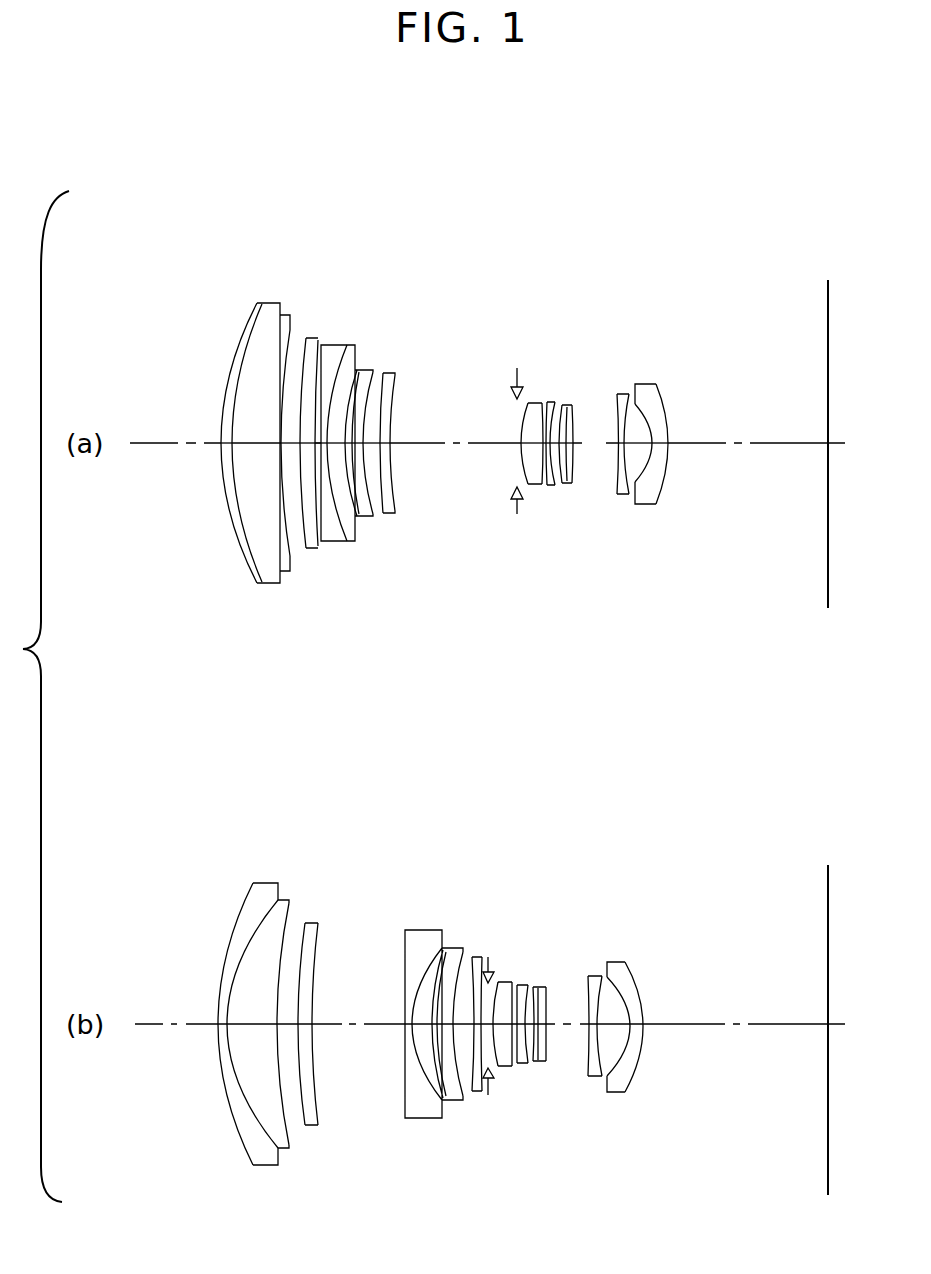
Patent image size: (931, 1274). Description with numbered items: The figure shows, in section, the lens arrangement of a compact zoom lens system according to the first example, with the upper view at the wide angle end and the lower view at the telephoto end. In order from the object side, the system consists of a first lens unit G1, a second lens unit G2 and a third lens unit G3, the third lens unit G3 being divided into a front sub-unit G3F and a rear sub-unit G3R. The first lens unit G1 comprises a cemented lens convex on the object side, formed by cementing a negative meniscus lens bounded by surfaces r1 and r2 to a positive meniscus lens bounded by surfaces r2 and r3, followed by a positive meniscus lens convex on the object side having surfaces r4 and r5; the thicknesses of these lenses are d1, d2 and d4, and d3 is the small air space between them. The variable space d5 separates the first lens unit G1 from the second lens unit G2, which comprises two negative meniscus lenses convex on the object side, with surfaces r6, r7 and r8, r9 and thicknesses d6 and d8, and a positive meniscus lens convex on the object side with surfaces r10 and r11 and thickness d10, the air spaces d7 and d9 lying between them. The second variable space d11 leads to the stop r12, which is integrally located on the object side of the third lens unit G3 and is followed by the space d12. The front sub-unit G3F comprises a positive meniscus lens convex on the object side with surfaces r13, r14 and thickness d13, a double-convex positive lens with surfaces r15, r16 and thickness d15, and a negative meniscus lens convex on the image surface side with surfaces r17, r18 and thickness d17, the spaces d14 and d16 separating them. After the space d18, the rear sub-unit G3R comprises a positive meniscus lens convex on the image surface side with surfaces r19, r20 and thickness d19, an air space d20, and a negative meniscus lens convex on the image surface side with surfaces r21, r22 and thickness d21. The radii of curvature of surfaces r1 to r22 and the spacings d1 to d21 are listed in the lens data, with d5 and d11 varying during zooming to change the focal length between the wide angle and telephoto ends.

The first lens unit G1 is at (321, 210).
The second lens unit G2 is at (410, 210).
The third lens unit G3 is at (665, 162).
The front sub-unit of the third lens unit G3F is at (580, 212).
The rear sub-unit of the third lens unit G3R is at (665, 212).
The radius of curvature of the first lens surface r1 is at (245, 320).
The radius of curvature of the second lens surface r2 is at (260, 302).
The radius of curvature of the third lens surface r3 is at (290, 315).
The radius of curvature of the fourth lens surface r4 is at (292, 330).
The radius of curvature of the fifth lens surface r5 is at (313, 340).
The radius of curvature of the sixth lens surface r6 is at (322, 345).
The radius of curvature of the seventh lens surface r7 is at (355, 345).
The radius of curvature of the eighth lens surface r8 is at (358, 370).
The radius of curvature of the ninth lens surface r9 is at (386, 372).
The radius of curvature of the tenth lens surface r10 is at (394, 373).
The radius of curvature of the eleventh lens surface r11 is at (397, 385).
The stop surface r12 is at (520, 395).
The radius of curvature of the thirteenth lens surface r13 is at (530, 400).
The radius of curvature of the fourteenth lens surface r14 is at (540, 401).
The radius of curvature of the fifteenth lens surface r15 is at (550, 402).
The radius of curvature of the sixteenth lens surface r16 is at (562, 404).
The radius of curvature of the seventeenth lens surface r17 is at (568, 404).
The radius of curvature of the eighteenth lens surface r18 is at (575, 417).
The radius of curvature of the nineteenth lens surface r19 is at (618, 393).
The radius of curvature of the twentieth lens surface r20 is at (630, 393).
The radius of curvature of the twenty-first lens surface r21 is at (652, 384).
The radius of curvature of the twenty-second lens surface r22 is at (663, 393).
The space between first and second lens surfaces d1 is at (222, 453).
The space between second and third lens surfaces d2 is at (256, 461).
The space between third and fourth lens surfaces d3 is at (290, 520).
The space between fourth and fifth lens surfaces d4 is at (300, 522).
The space between fifth and sixth lens surfaces d5 is at (326, 530).
The space between sixth and seventh lens surfaces d6 is at (340, 530).
The space between seventh and eighth lens surfaces d7 is at (360, 520).
The space between eighth and ninth lens surfaces d8 is at (370, 517).
The space between ninth and tenth lens surfaces d9 is at (393, 507).
The space between tenth and eleventh lens surfaces d10 is at (385, 473).
The space between eleventh lens surface and stop d11 is at (480, 461).
The space between stop and thirteenth lens surface d12 is at (522, 485).
The space between thirteenth and fourteenth lens surfaces d13 is at (538, 486).
The space between fourteenth and fifteenth lens surfaces d14 is at (548, 487).
The space between fifteenth and sixteenth lens surfaces d15 is at (560, 497).
The space between sixteenth and seventeenth lens surfaces d16 is at (567, 490).
The space between seventeenth and eighteenth lens surfaces d17 is at (573, 481).
The space between eighteenth and nineteenth lens surfaces d18 is at (575, 455).
The space between nineteenth and twentieth lens surfaces d19 is at (620, 497).
The space between twentieth and twenty-first lens surfaces d20 is at (647, 506).
The space between twenty-first and twenty-second lens surfaces d21 is at (668, 473).